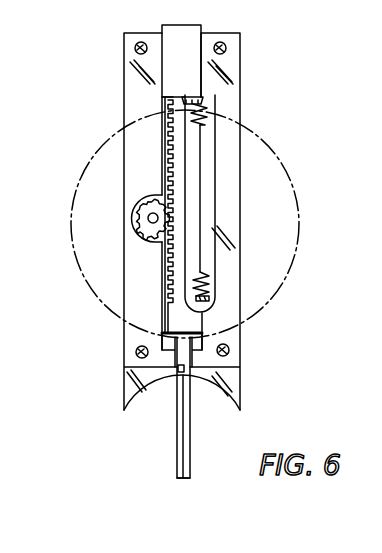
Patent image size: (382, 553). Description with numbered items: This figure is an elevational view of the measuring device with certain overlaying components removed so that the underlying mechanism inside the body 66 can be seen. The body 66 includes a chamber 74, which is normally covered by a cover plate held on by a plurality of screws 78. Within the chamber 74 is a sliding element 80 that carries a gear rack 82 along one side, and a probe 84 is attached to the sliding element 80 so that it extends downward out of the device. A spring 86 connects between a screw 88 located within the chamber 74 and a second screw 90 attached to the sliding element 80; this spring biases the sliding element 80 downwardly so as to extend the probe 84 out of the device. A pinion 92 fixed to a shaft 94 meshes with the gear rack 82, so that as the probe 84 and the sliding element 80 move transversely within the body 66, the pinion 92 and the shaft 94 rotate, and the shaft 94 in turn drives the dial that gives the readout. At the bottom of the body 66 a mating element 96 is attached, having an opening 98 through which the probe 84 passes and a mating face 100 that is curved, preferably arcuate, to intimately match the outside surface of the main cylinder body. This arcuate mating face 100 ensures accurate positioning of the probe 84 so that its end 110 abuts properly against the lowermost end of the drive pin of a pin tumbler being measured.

The body 66 is at (140, 103).
The chamber 74 is at (202, 186).
The screws 78 is at (142, 45).
The sliding element 80 is at (190, 38).
The gear rack 82 is at (166, 308).
The probe 84 is at (190, 422).
The spring 86 is at (218, 136).
The screw 88 is at (212, 296).
The second screw 90 is at (207, 100).
The pinion 92 is at (150, 238).
The shaft 94 is at (150, 216).
The mating element 96 is at (241, 360).
The opening 98 is at (165, 377).
The mating face 100 is at (217, 415).
The end 110 is at (183, 480).